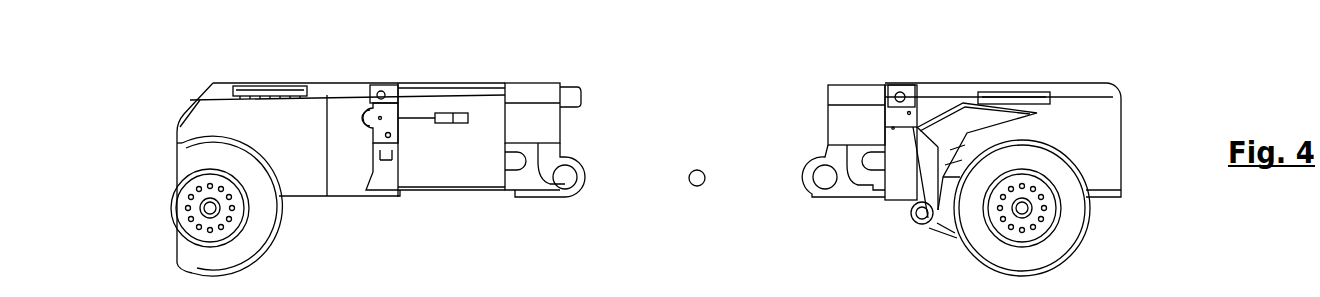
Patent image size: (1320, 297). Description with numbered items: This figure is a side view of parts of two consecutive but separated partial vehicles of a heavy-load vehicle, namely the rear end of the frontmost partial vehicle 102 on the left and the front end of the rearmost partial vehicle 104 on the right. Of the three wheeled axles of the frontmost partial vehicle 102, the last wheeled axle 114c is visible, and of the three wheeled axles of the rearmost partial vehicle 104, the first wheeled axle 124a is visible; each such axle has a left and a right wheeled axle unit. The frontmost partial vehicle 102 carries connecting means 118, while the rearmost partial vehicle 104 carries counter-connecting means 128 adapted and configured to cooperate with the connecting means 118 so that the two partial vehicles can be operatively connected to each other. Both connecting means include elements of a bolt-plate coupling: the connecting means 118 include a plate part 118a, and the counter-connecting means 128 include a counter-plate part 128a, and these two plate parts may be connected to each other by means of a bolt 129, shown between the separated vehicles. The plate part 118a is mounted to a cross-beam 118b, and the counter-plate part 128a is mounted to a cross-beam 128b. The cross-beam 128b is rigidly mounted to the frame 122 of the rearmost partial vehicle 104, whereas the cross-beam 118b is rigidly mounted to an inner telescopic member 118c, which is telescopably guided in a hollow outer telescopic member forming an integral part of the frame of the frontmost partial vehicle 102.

The frontmost partial vehicle 102 is at (237, 130).
The rearmost partial vehicle 104 is at (1107, 133).
The wheeled axle 114c is at (213, 212).
The connecting means 118 is at (460, 103).
The plate part 118a is at (570, 190).
The cross-beam 118b is at (532, 117).
The inner telescopic member 118c is at (452, 167).
The frame 122 is at (1068, 117).
The wheeled axle 124a is at (1022, 208).
The counter-connecting means 128 is at (845, 95).
The counter-plate part 128a is at (815, 188).
The cross-beam 128b is at (857, 122).
The bolt 129 is at (697, 170).